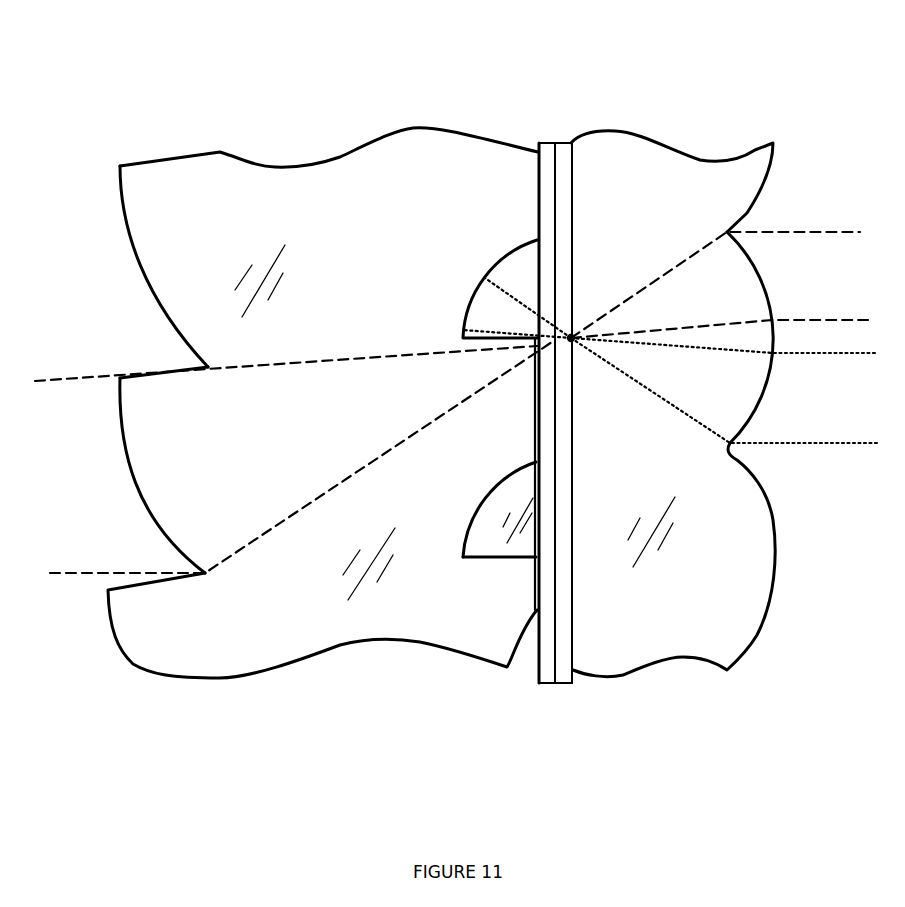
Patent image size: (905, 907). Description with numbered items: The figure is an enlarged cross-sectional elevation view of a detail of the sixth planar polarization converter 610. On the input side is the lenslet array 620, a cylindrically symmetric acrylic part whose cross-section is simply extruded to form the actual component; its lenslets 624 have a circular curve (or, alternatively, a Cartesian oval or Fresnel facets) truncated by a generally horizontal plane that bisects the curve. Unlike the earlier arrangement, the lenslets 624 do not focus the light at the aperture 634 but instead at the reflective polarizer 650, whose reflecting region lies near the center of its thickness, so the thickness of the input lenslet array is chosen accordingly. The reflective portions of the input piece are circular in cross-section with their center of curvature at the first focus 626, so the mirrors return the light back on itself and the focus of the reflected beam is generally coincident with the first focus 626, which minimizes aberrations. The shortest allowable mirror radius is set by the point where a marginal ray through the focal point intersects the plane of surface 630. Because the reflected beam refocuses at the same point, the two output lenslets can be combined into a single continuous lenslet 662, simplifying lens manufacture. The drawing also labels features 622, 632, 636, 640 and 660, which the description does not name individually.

The polarization converter 610 is at (423, 38).
The lenslet array 620 is at (310, 622).
The first curved surface 622 is at (116, 160).
The lenslets 624 is at (142, 523).
The first focus 626 is at (578, 327).
The surface 630 is at (546, 417).
The upper curved surface 632 is at (508, 242).
The aperture 634 is at (530, 377).
The flat surface 636 is at (482, 550).
The first plate 640 is at (543, 690).
The reflective polarizer 650 is at (570, 690).
The second lens body 660 is at (623, 655).
The single continuous lenslet 662 is at (778, 290).